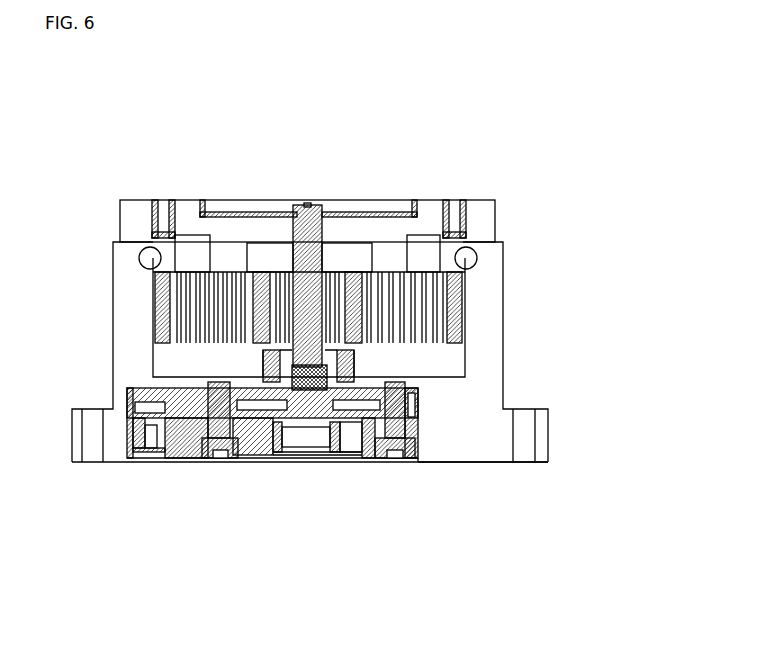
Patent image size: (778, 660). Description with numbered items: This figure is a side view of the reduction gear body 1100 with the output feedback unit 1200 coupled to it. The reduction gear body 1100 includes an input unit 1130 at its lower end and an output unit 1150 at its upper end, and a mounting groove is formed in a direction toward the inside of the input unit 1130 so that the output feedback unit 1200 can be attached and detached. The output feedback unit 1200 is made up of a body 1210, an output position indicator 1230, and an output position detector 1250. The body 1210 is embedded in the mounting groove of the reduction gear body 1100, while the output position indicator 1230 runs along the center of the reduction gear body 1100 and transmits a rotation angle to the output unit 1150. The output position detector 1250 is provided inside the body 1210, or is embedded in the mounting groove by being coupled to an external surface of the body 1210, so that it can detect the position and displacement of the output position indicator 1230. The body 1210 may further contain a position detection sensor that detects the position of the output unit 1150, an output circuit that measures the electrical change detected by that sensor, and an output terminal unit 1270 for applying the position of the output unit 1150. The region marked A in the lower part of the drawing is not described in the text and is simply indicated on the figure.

The reduction gear body 1100 is at (503, 317).
The output unit 1150 is at (357, 194).
The output position indicator 1230 is at (290, 257).
The output feedback unit 1200 is at (247, 468).
The body 1210 is at (188, 462).
The output terminal unit 1270 is at (150, 462).
The output position detector 1250 is at (306, 440).
The region A is at (412, 462).
The input unit 1130 is at (466, 468).